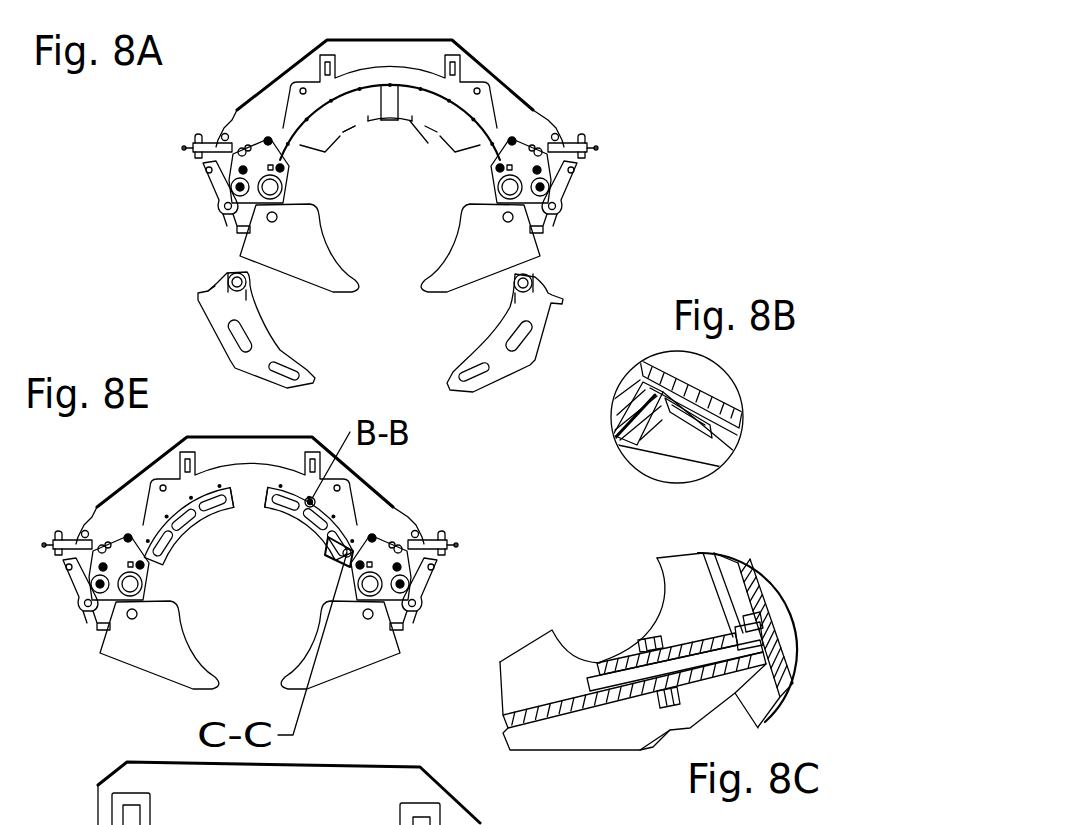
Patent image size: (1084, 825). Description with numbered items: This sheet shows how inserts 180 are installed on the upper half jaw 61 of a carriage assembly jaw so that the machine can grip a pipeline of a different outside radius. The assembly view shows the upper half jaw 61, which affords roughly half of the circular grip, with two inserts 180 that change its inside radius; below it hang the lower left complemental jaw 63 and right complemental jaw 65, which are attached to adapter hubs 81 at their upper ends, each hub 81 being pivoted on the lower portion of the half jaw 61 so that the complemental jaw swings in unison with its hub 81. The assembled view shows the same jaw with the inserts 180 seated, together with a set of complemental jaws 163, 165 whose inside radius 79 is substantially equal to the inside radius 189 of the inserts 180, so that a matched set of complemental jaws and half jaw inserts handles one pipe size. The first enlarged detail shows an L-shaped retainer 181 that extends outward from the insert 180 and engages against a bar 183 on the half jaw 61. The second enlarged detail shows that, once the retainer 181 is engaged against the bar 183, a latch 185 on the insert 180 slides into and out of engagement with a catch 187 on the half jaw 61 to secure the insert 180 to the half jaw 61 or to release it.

In FIG. 8A, the upper half jaw 61 is at (268, 102).
In FIG. 8E, the upper half jaw 61 is at (247, 490).
In FIG. 8C, the upper half jaw 61 is at (768, 587).
In FIG. 8A, the inside radius of the set of complemental jaws 79 is at (410, 128).
In FIG. 8A, the insert 180 is at (390, 88).
In FIG. 8E, the insert 180 is at (249, 553).
In FIG. 8C, the insert 180 is at (657, 562).
In FIG. 8A, the inside radius of the inserts 189 is at (346, 136).
In FIG. 8E, the inside radius of the inserts 189 is at (236, 538).
In FIG. 8A, the adapter hub 81 is at (233, 222).
In FIG. 8E, the adapter hub 81 is at (264, 597).
In FIG. 8A, the complemental jaw 165 is at (315, 272).
In FIG. 8E, the complemental jaw 165 is at (159, 663).
In FIG. 8A, the complemental jaw 163 is at (462, 270).
In FIG. 8E, the complemental jaw 163 is at (351, 663).
In FIG. 8A, the right complemental jaw 65 is at (217, 315).
In FIG. 8A, the left complemental jaw 63 is at (553, 308).
In FIG. 8B, the L-shaped retainer 181 is at (727, 413).
In FIG. 8B, the bar 183 is at (677, 430).
In FIG. 8C, the latch 185 is at (633, 673).
In FIG. 8C, the catch 187 is at (757, 636).